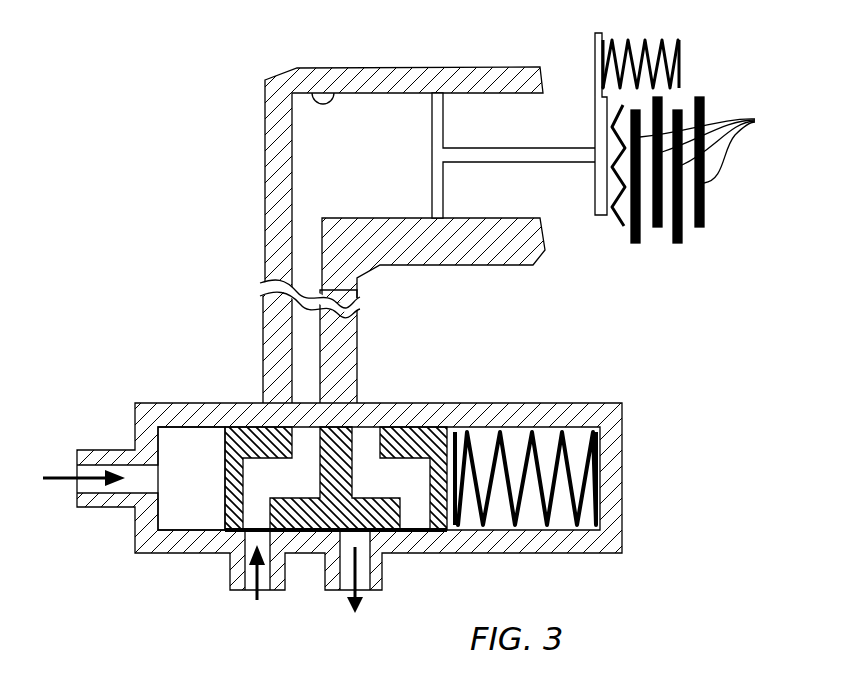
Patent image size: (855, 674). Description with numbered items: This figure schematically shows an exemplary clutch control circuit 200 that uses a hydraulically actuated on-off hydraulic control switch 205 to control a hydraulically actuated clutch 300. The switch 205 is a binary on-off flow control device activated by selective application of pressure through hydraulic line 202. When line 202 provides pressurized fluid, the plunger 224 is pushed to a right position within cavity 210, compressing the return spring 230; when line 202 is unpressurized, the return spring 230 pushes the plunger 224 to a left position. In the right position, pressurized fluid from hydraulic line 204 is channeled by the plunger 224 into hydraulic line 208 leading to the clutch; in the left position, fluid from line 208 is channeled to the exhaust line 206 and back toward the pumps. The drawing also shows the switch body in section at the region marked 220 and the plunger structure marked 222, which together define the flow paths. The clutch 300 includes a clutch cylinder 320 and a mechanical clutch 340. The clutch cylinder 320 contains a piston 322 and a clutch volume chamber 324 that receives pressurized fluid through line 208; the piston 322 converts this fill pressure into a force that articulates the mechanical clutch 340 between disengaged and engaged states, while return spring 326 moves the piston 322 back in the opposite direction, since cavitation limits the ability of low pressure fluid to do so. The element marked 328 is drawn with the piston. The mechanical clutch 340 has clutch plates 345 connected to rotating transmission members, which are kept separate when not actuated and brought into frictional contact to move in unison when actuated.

The clutch control circuit 200 is at (158, 92).
The hydraulic line 202 is at (70, 478).
The hydraulic line 204 is at (277, 642).
The on-off hydraulic control switch 205 is at (130, 525).
The exhaust line 206 is at (375, 642).
The hydraulic line 208 is at (307, 380).
The cavity 210 is at (190, 464).
The valve seat 220 is at (222, 487).
The valve member 222 is at (305, 443).
The plunger 224 is at (390, 474).
The return spring 230 is at (572, 473).
The hydraulically actuated clutch 300 is at (503, 53).
The clutch cylinder 320 is at (312, 92).
The piston 322 is at (445, 128).
The clutch volume chamber 324 is at (313, 132).
The return spring 326 is at (680, 72).
The armature plate 328 is at (615, 218).
The mechanical clutch 340 is at (682, 232).
The clutch plates 345 is at (755, 121).